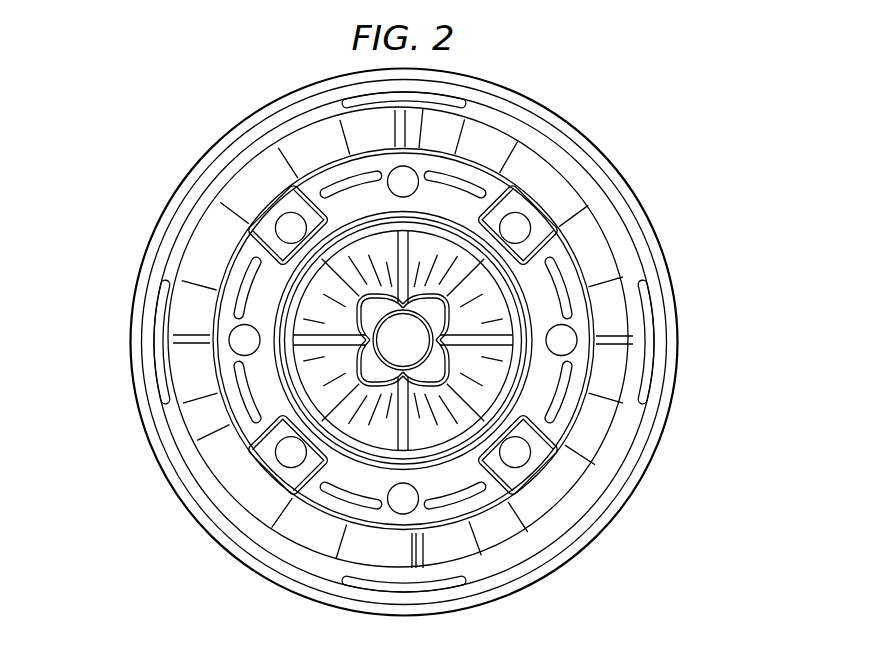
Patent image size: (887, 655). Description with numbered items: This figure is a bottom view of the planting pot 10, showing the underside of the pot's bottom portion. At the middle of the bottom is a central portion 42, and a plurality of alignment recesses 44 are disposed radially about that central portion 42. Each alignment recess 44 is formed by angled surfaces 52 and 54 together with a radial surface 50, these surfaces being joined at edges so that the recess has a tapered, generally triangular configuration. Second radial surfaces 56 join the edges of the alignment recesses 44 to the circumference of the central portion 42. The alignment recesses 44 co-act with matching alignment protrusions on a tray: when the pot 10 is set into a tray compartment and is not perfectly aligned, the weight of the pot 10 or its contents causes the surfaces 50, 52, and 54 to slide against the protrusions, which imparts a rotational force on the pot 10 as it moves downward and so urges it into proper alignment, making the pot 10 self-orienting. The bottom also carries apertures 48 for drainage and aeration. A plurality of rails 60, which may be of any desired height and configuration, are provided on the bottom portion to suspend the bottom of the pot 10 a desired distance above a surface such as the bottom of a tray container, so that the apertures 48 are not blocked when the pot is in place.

The planting pot 10 is at (696, 90).
The central portion 42 is at (396, 343).
The alignment recesses 44 is at (545, 318).
The apertures 48 is at (514, 227).
The radial surface 50 is at (482, 390).
The angled surface 52 is at (533, 428).
The angled surface 54 is at (517, 268).
The second radial surfaces 56 is at (403, 368).
The rails 60 is at (467, 182).